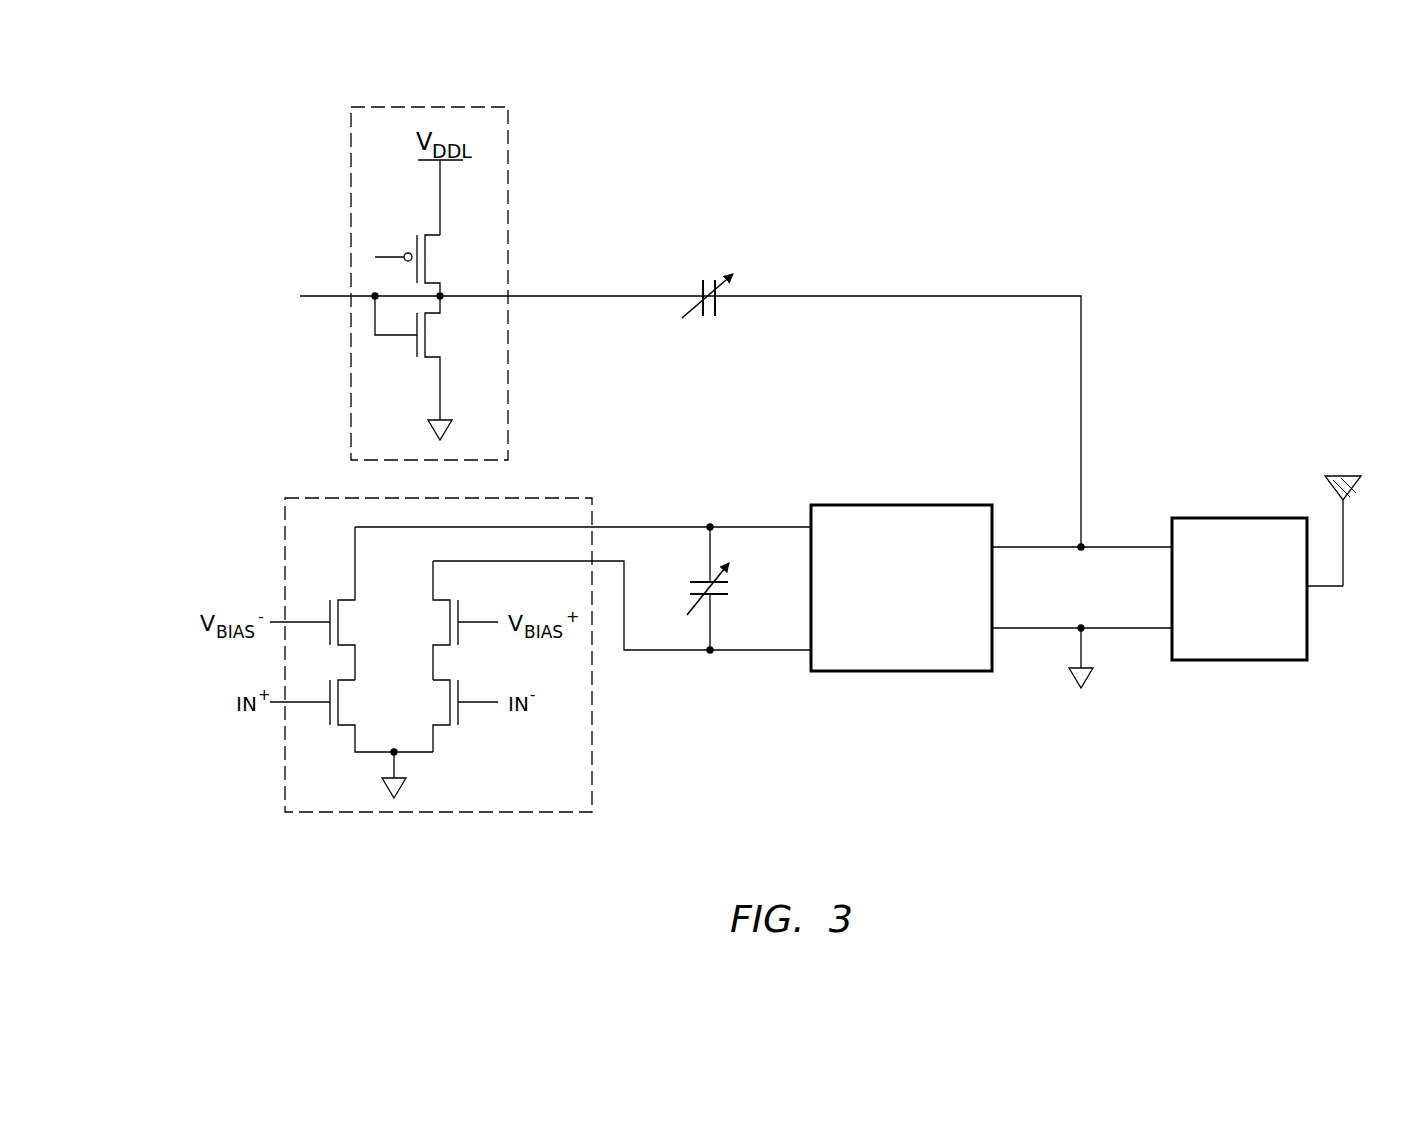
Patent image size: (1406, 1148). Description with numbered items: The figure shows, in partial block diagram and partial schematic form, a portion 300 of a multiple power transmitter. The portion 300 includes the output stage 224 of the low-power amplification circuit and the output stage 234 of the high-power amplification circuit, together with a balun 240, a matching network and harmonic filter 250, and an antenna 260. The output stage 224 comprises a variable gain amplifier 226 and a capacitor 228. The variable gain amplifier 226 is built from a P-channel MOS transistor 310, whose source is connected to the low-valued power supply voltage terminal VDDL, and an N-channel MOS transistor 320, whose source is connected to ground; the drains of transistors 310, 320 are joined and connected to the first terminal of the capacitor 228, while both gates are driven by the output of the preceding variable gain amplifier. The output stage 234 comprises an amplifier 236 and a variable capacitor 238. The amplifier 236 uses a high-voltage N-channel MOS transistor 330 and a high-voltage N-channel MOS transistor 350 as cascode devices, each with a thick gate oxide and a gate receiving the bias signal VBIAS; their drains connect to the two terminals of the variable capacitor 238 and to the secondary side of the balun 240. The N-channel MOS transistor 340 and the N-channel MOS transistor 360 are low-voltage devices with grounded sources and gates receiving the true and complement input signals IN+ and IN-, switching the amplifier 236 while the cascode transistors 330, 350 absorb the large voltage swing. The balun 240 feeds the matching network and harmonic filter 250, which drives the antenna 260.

The portion 300 is at (146, 122).
The output stage 224 is at (320, 208).
The variable gain amplifier 226 is at (508, 190).
The capacitor 228 is at (703, 282).
The output stage 234 is at (262, 547).
The amplifier 236 is at (508, 498).
The variable capacitor 238 is at (700, 582).
The balun 240 is at (878, 505).
The matching network and harmonic filter 250 is at (1213, 518).
The antenna 260 is at (1345, 540).
The P-channel MOS transistor 310 is at (425, 235).
The N-channel MOS transistor 320 is at (425, 357).
The high-voltage N-channel MOS transistor 330 is at (338, 600).
The N-channel MOS transistor 340 is at (338, 725).
The high-voltage N-channel MOS transistor 350 is at (450, 600).
The N-channel MOS transistor 360 is at (450, 725).